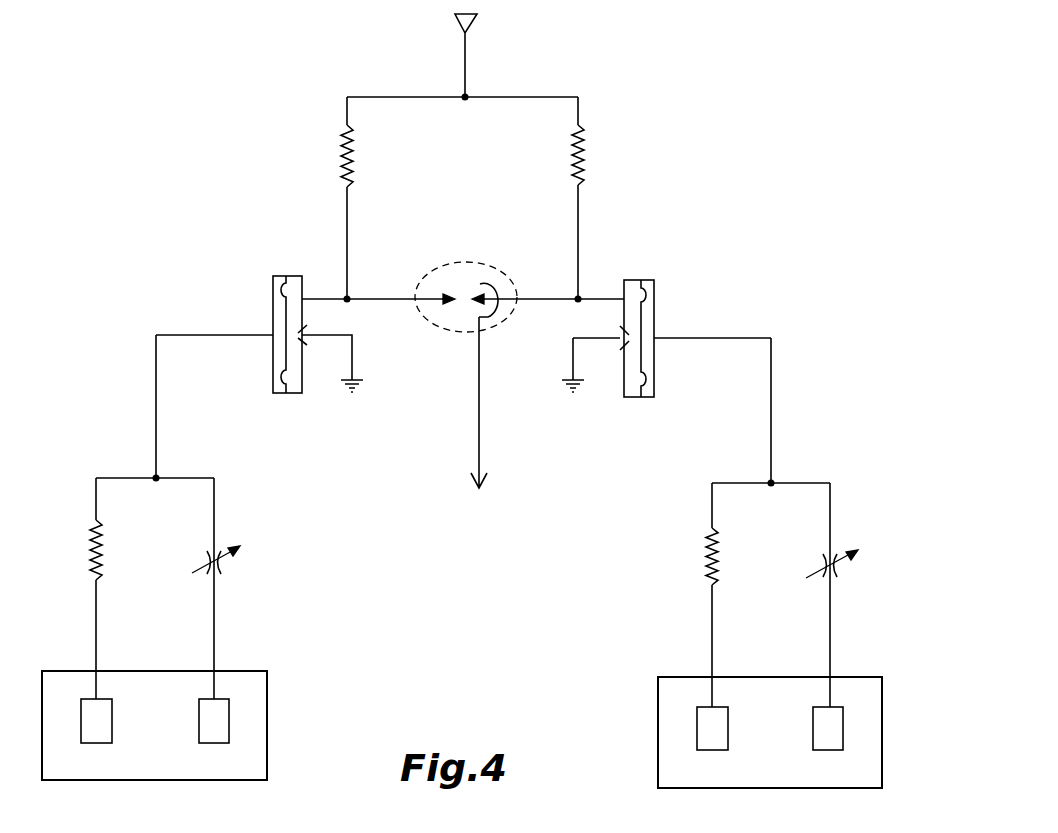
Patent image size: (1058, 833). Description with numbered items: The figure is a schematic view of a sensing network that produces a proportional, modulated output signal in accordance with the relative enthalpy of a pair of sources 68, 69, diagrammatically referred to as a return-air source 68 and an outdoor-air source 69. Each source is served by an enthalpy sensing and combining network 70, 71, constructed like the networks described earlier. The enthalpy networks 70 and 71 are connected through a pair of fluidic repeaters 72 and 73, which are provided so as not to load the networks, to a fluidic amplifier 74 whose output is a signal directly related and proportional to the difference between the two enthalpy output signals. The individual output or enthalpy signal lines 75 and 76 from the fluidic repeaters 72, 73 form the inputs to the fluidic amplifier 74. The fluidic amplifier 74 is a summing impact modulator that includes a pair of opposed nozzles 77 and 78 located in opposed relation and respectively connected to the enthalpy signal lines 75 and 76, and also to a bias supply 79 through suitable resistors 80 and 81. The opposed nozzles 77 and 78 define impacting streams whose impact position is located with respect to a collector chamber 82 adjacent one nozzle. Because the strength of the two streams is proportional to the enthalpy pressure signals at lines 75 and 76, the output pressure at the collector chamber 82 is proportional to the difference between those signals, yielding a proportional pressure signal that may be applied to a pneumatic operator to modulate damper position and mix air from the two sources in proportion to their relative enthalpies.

The return-air source 68 is at (240, 671).
The outdoor-air source 69 is at (673, 677).
The enthalpy sensing and combining network 70 is at (165, 629).
The enthalpy sensing and combining network 71 is at (780, 644).
The fluidic repeater 72 is at (286, 396).
The fluidic repeater 73 is at (641, 400).
The fluidic amplifier 74 is at (446, 334).
The enthalpy signal line 75 is at (320, 297).
The enthalpy signal line 76 is at (605, 297).
The nozzle 77 is at (452, 294).
The nozzle 78 is at (474, 294).
The bias supply 79 is at (478, 18).
The resistor 80 is at (355, 157).
The resistor 81 is at (573, 155).
The collector chamber 82 is at (497, 316).